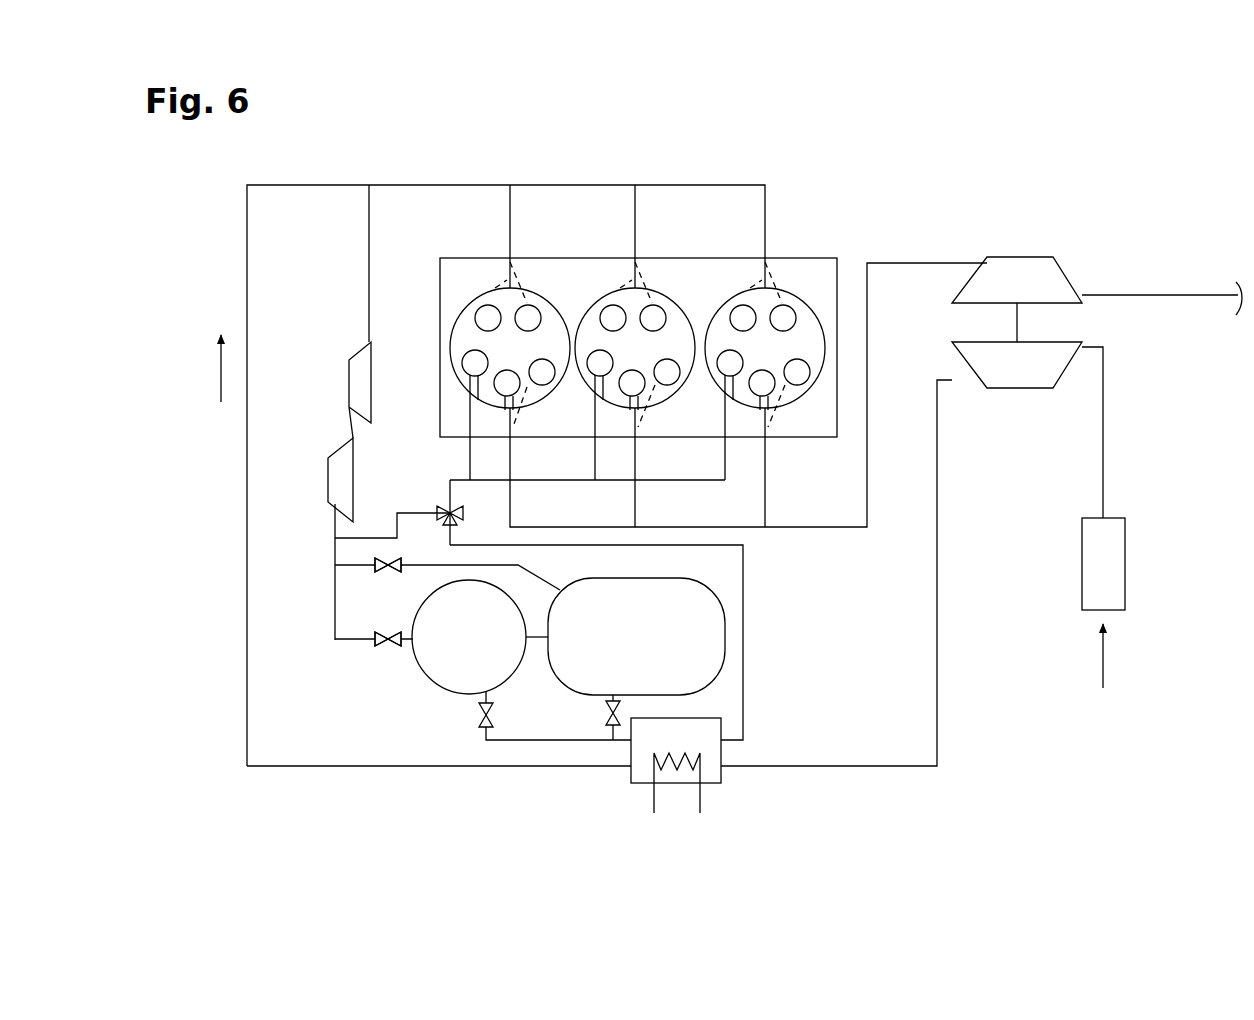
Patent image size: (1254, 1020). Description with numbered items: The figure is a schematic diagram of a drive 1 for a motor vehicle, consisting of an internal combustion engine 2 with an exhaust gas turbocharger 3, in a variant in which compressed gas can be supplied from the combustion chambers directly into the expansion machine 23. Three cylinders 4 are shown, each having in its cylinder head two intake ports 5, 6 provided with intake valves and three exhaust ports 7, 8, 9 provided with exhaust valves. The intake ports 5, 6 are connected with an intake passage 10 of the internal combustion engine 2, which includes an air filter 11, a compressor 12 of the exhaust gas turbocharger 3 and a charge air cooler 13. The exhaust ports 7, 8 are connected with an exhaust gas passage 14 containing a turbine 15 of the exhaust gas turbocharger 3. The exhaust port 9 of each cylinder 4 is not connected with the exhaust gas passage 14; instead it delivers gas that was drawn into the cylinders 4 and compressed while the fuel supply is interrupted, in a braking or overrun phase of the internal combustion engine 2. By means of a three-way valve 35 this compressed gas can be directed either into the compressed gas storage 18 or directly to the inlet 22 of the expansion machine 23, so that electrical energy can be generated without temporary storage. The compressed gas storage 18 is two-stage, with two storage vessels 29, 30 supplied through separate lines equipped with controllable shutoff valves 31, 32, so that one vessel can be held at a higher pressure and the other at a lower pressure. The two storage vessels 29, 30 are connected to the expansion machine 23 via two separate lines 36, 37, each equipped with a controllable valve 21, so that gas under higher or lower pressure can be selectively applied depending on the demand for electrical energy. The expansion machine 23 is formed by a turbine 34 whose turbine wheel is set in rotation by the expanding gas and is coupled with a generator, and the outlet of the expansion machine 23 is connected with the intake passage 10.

The drive 1 is at (820, 209).
The internal combustion engine 2 is at (845, 252).
The exhaust gas turbocharger 3 is at (1097, 342).
The cylinder 4 is at (566, 328).
The intake port 5 is at (487, 316).
The intake port 6 is at (527, 316).
The exhaust port 7 is at (548, 385).
The exhaust port 8 is at (512, 395).
The exhaust port 9 is at (472, 366).
The intake passage 10 is at (576, 182).
The air filter 11 is at (1090, 576).
The compressor 12 is at (1004, 377).
The charge air cooler 13 is at (712, 775).
The exhaust gas passage 14 is at (840, 530).
The turbine 15 is at (1004, 292).
The compressed gas storage 18 is at (643, 642).
The valve 21 is at (382, 646).
The inlet 22 is at (333, 510).
The expansion machine 23 is at (322, 502).
The storage vessel 29 is at (456, 651).
The storage vessel 30 is at (623, 651).
The shutoff valve 31 is at (479, 725).
The shutoff valve 32 is at (605, 722).
The turbine 34 is at (352, 407).
The three-way valve 35 is at (444, 512).
The line 36 is at (420, 563).
The line 37 is at (410, 646).